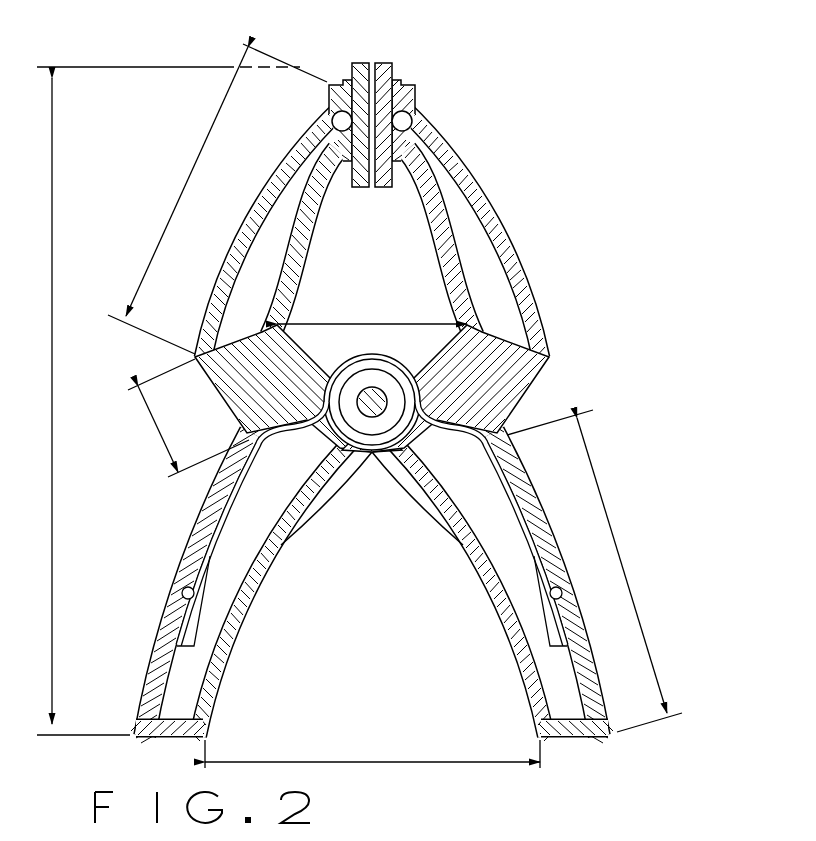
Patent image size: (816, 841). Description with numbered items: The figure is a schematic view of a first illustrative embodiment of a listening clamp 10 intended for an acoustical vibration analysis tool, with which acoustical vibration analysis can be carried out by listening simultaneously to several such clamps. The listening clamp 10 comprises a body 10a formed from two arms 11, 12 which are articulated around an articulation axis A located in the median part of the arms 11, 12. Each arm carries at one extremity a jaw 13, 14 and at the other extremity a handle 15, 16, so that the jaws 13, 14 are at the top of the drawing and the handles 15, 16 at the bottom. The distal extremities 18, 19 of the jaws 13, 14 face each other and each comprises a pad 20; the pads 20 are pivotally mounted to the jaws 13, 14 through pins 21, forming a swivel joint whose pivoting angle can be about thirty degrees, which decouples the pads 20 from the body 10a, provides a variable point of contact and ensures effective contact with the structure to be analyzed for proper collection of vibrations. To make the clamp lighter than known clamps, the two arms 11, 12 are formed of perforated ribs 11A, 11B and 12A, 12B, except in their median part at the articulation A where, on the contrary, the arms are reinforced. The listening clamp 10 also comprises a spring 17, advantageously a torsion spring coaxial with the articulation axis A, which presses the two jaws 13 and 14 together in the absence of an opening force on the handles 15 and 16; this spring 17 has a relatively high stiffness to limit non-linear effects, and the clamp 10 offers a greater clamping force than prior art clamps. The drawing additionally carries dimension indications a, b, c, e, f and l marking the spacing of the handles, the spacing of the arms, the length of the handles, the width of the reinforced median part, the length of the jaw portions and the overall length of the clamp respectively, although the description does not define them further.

The listening clamp 10 is at (398, 373).
The body 10a is at (550, 364).
The arm 11 is at (502, 384).
The perforated rib 11A is at (513, 423).
The perforated rib 11B is at (457, 250).
The arm 12 is at (228, 373).
The perforated rib 12A is at (231, 423).
The perforated rib 12B is at (297, 259).
The jaw 13 is at (468, 160).
The jaw 14 is at (238, 231).
The handle 15 is at (608, 690).
The handle 16 is at (126, 660).
The spring 17 is at (210, 575).
The distal extremity 18 is at (411, 82).
The distal extremity 19 is at (337, 82).
The pad 20 is at (355, 62).
The pin 21 is at (333, 122).
The articulation axis A is at (370, 415).
The handle spacing a is at (337, 762).
The arm spacing b is at (392, 323).
The handle length c is at (628, 588).
The hinge width e is at (160, 451).
The arm length f is at (186, 186).
The overall length l is at (52, 395).